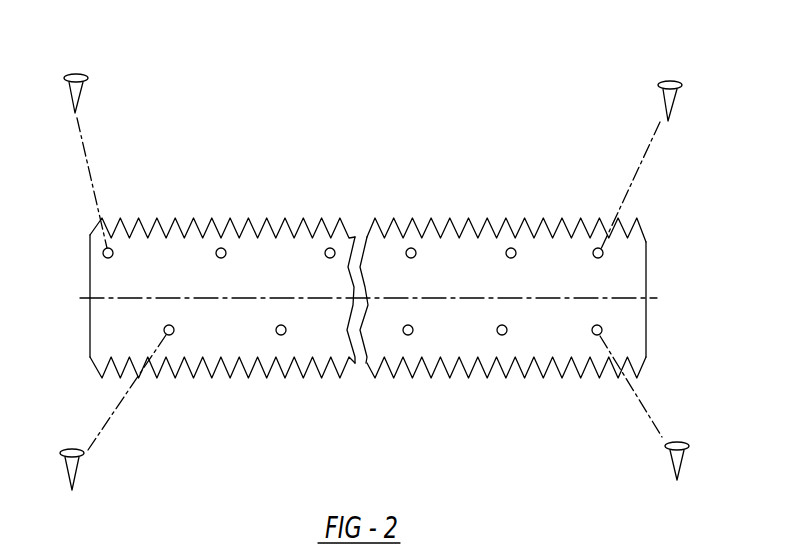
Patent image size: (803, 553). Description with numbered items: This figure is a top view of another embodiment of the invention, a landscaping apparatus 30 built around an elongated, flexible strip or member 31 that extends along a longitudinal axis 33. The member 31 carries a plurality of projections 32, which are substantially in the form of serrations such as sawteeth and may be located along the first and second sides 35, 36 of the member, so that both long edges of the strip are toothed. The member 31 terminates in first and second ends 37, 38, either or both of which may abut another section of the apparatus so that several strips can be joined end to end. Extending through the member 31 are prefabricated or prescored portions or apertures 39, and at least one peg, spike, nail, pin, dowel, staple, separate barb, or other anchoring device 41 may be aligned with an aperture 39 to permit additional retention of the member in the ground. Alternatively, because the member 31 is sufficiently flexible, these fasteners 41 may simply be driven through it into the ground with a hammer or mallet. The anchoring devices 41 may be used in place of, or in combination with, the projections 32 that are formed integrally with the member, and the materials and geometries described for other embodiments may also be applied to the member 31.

The landscaping apparatus 30 is at (371, 268).
The elongated flexible strip or member 31 is at (274, 262).
The projections 32 is at (200, 378).
The longitudinal axis 33 is at (633, 298).
The first side 35 is at (407, 213).
The second side 36 is at (552, 385).
The first end 37 is at (90, 272).
The second end 38 is at (647, 268).
The aperture 39 is at (113, 252).
The anchoring device 41 is at (78, 73).